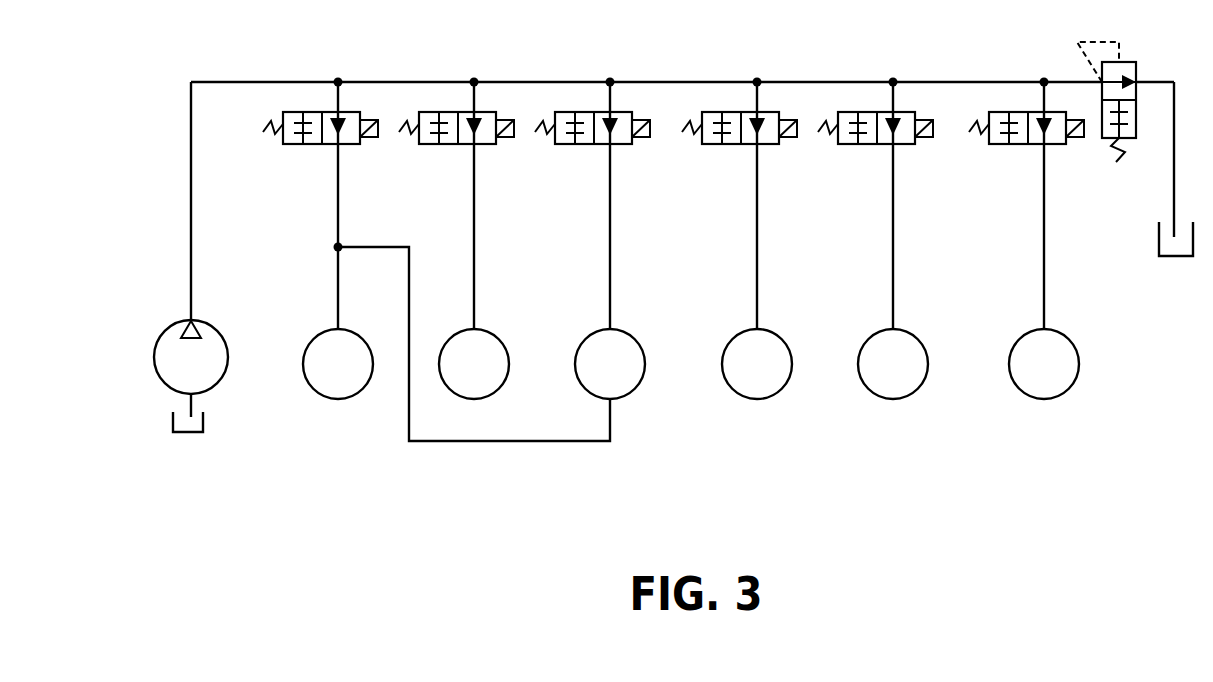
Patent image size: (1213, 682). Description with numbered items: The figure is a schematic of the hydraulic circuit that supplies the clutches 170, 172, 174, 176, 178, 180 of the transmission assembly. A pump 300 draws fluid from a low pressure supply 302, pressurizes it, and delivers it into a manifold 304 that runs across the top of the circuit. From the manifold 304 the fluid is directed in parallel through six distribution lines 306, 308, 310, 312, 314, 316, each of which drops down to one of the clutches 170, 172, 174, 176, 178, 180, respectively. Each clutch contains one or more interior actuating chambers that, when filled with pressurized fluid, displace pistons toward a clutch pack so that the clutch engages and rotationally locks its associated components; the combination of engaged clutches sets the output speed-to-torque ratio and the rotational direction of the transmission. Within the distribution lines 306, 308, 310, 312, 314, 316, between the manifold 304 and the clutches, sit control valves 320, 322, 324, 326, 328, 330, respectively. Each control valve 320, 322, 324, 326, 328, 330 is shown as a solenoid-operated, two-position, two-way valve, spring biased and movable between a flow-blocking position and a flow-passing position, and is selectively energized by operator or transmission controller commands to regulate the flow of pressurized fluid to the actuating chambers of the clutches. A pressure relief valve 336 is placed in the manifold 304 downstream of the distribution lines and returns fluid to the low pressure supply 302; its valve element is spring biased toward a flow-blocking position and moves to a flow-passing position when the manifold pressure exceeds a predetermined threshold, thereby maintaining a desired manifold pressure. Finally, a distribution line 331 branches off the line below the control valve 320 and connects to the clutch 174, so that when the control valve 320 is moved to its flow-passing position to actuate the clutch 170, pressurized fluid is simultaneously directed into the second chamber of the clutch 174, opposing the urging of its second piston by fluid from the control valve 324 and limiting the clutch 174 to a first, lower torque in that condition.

The pump 300 is at (191, 249).
The low pressure supply 302 is at (203, 422).
The manifold 304 is at (258, 82).
The distribution line 306 is at (338, 218).
The distribution line 308 is at (474, 218).
The distribution line 310 is at (610, 218).
The distribution line 312 is at (757, 218).
The distribution line 314 is at (893, 218).
The distribution line 316 is at (1044, 200).
The control valve 320 is at (313, 144).
The control valve 322 is at (449, 144).
The control valve 324 is at (585, 144).
The control valve 326 is at (732, 144).
The control valve 328 is at (866, 144).
The control valve 330 is at (1020, 144).
The distribution line 331 is at (436, 444).
The pressure relief valve 336 is at (1136, 68).
The clutch 170 is at (363, 339).
The clutch 172 is at (499, 339).
The clutch 174 is at (635, 339).
The clutch 176 is at (782, 339).
The clutch 178 is at (918, 339).
The clutch 180 is at (1069, 339).